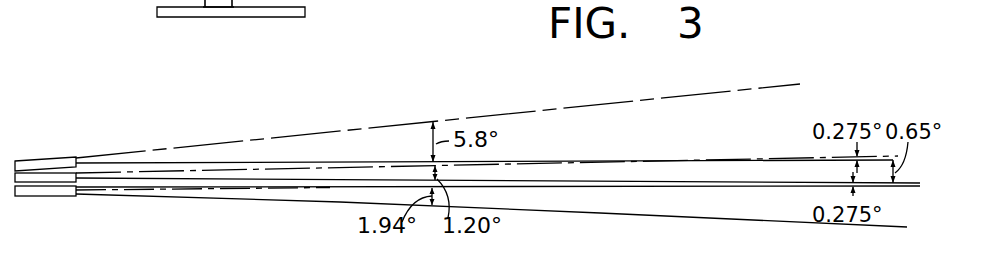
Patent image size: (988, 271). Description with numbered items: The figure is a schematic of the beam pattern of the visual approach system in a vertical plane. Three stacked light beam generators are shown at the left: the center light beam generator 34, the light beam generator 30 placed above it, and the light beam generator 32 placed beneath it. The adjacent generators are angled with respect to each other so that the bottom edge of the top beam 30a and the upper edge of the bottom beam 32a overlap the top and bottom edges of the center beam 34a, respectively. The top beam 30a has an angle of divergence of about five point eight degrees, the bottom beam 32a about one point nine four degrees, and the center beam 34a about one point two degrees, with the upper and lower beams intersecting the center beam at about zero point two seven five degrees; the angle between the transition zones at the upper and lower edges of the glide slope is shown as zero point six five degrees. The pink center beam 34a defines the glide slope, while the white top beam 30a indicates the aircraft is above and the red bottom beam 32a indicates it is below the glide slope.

The light beam generator 30 is at (58, 159).
The light beam generator 32 is at (60, 197).
The center light beam generator 34 is at (38, 178).
The top beam 30a is at (266, 157).
The bottom beam 32a is at (267, 189).
The center beam 34a is at (268, 171).